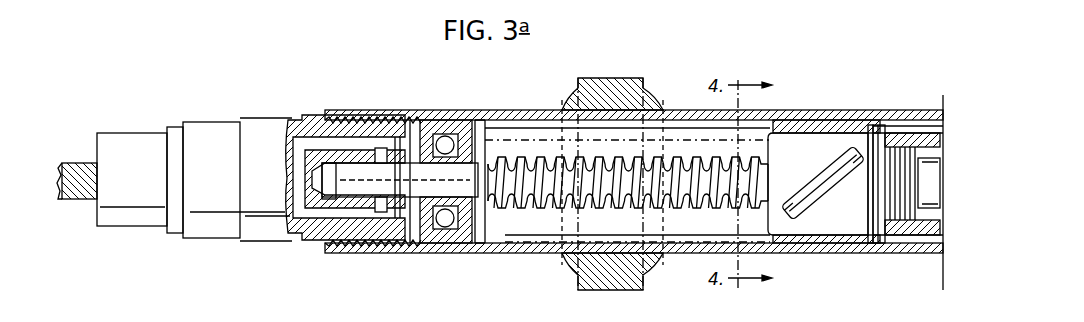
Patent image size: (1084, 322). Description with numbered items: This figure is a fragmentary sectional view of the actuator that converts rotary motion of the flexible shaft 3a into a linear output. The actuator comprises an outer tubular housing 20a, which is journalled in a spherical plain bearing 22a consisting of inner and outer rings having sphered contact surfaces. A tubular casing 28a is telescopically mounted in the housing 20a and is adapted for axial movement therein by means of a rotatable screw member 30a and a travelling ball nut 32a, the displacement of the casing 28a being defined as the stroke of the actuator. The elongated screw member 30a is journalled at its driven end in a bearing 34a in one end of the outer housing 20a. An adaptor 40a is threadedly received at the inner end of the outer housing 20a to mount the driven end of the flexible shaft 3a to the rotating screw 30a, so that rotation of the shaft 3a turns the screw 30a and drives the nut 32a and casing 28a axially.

The flexible shaft 3a is at (90, 199).
The adaptor 40a is at (317, 120).
The bearing 34a is at (446, 136).
The spherical plain bearing 22a is at (577, 98).
The outer tubular housing 20a is at (851, 112).
The screw member 30a is at (552, 209).
The travelling ball nut 32a is at (827, 223).
The tubular casing 28a is at (925, 233).